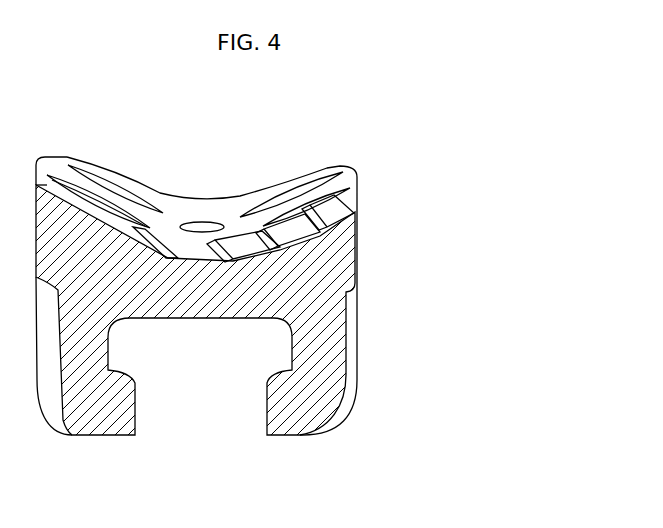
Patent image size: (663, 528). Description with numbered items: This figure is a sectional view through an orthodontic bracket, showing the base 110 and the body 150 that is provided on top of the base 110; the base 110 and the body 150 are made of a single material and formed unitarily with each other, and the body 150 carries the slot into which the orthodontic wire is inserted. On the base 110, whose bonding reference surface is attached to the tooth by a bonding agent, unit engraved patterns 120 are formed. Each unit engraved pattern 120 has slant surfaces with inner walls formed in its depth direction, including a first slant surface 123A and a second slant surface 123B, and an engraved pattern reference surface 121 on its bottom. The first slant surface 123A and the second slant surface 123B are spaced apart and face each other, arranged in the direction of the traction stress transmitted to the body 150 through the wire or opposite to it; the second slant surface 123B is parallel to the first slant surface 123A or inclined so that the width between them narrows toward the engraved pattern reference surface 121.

The base 110 is at (347, 240).
The unit engraved pattern 120 is at (285, 235).
The engraved pattern reference surface 121 is at (122, 250).
The first slant surface 123A is at (200, 250).
The second slant surface 123B is at (167, 228).
The body 150 is at (312, 408).